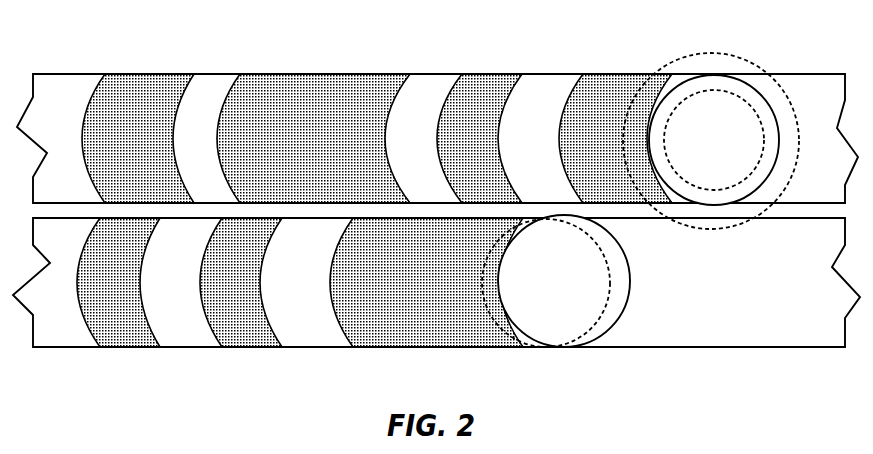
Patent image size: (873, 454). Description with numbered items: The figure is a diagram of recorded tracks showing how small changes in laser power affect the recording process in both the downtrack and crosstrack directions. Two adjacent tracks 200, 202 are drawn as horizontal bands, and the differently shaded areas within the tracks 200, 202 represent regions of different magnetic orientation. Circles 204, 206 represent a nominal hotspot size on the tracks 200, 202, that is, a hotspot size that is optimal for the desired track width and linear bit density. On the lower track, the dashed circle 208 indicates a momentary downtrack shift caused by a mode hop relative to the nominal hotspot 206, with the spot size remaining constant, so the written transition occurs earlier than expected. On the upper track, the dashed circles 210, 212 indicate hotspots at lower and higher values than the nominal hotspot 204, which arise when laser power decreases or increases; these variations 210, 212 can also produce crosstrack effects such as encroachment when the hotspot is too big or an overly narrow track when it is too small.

The track 200 is at (77, 74).
The track 202 is at (68, 347).
The circle 204 is at (714, 75).
The circle 206 is at (590, 342).
The dashed circle 208 is at (502, 338).
The dashed circle 210 is at (727, 90).
The dashed circle 212 is at (668, 63).